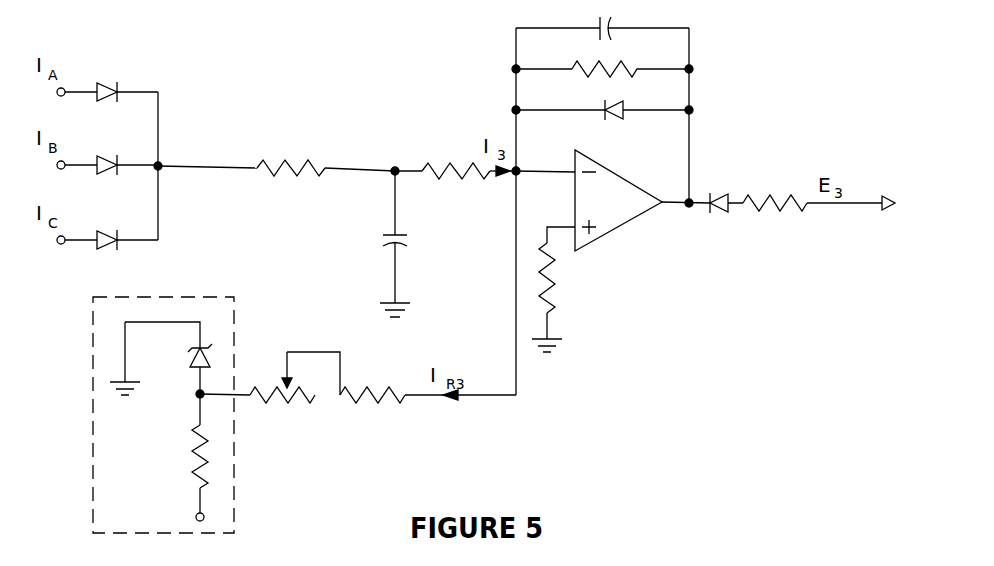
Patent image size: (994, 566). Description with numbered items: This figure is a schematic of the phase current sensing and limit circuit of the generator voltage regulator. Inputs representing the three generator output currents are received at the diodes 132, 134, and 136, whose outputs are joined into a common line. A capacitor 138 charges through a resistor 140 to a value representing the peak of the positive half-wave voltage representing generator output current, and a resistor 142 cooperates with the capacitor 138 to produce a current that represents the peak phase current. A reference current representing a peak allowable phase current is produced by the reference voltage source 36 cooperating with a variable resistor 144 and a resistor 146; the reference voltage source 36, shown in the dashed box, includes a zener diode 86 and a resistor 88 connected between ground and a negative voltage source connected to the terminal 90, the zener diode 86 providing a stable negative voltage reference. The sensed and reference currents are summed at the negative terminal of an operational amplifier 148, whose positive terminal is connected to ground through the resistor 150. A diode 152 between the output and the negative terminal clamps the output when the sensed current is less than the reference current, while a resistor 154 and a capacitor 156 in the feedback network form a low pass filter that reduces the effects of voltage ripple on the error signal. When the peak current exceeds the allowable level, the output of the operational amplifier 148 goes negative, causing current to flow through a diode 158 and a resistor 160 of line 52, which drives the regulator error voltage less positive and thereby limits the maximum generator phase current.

The diode 132 is at (107, 86).
The diode 134 is at (108, 159).
The diode 136 is at (108, 234).
The capacitor 138 is at (408, 238).
The resistor 140 is at (276, 160).
The resistor 142 is at (436, 162).
The variable resistor 144 is at (292, 402).
The resistor 146 is at (380, 403).
The operational amplifier 148 is at (604, 240).
The resistor 150 is at (556, 288).
The diode 152 is at (623, 107).
The resistor 154 is at (630, 66).
The capacitor 156 is at (610, 30).
The diode 158 is at (708, 192).
The resistor 160 is at (767, 211).
The line 52 is at (860, 205).
The reference voltage source 36 is at (214, 296).
The zener diode 86 is at (193, 364).
The resistor 88 is at (194, 432).
The terminal 90 is at (194, 515).